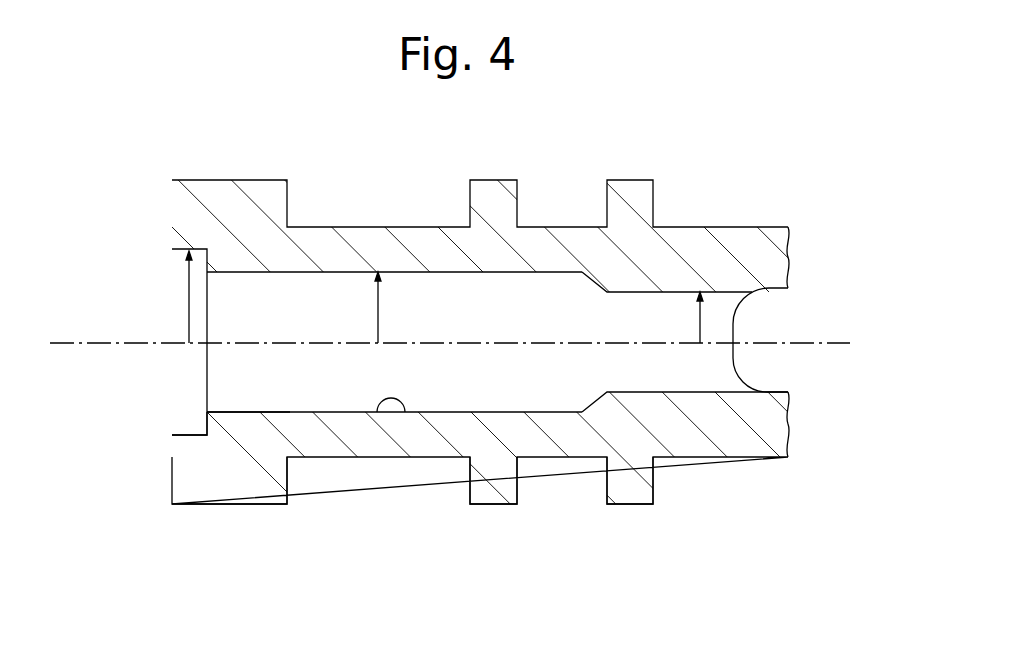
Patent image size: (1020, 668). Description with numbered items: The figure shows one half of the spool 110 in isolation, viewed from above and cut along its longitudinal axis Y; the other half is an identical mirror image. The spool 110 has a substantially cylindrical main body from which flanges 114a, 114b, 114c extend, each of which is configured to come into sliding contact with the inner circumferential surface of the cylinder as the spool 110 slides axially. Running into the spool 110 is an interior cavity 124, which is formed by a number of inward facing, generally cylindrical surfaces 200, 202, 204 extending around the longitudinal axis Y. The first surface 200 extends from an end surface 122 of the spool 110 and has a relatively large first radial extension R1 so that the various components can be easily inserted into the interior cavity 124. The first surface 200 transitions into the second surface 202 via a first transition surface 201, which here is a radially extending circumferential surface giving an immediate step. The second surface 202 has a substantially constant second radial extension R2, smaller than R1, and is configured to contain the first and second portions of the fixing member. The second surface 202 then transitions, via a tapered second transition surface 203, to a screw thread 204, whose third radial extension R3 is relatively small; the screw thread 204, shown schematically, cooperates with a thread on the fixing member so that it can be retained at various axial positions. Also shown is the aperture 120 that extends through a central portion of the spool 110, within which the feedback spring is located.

The spool 110 is at (215, 192).
The aperture 120 is at (780, 393).
The end surface 122 is at (172, 237).
The interior cavity 124 is at (308, 325).
The flange 114a is at (230, 483).
The flange 114b is at (490, 493).
The flange 114c is at (635, 491).
The first surface 200 is at (185, 434).
The first transition surface 201 is at (207, 425).
The second surface 202 is at (405, 412).
The second transition surface 203 is at (588, 468).
The screw thread 204 is at (660, 292).
The first radial extension R1 is at (188, 284).
The second radial extension R2 is at (378, 303).
The third radial extension R3 is at (700, 315).
The longitudinal axis Y is at (70, 343).